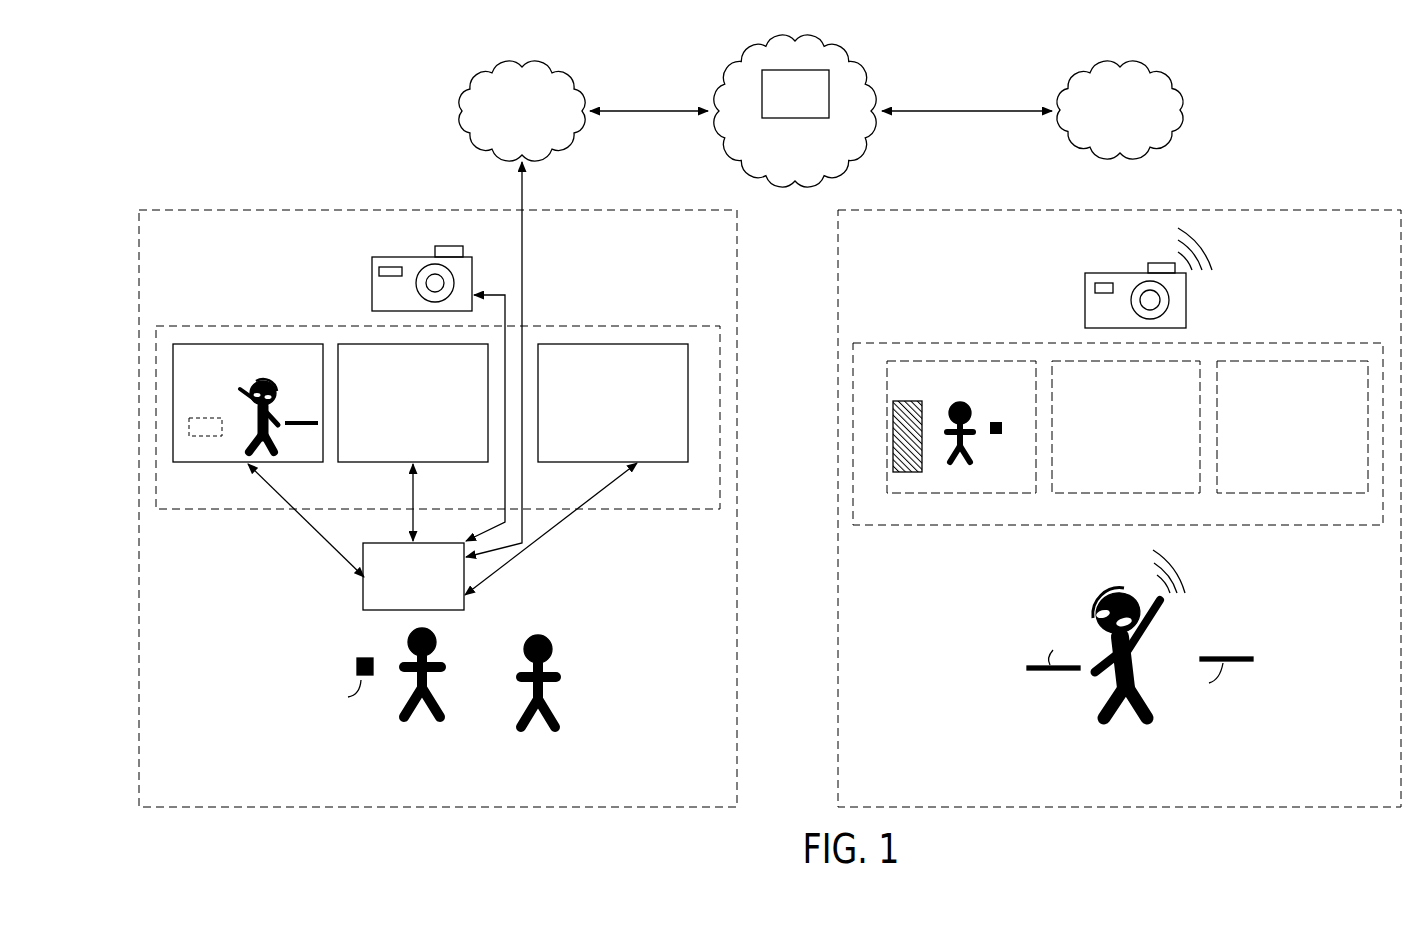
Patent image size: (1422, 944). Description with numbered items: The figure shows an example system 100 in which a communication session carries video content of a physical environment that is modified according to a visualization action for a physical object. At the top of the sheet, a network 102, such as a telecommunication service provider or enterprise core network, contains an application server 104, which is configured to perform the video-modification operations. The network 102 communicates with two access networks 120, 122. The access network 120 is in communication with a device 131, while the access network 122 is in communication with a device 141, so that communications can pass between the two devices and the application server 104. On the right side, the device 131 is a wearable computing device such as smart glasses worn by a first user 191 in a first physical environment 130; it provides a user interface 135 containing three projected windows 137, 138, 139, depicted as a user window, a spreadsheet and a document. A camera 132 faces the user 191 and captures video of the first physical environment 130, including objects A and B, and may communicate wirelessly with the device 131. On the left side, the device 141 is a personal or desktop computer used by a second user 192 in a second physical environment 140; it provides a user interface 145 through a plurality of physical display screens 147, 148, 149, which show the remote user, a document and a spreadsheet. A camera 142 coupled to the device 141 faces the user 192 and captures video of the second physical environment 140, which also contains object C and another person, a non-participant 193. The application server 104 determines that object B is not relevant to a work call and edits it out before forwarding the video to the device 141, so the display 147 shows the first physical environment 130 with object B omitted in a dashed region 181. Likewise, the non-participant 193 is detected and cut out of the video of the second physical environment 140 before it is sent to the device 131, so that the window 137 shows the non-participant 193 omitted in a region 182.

The system 100 is at (122, 43).
The network 102 is at (778, 164).
The application server 104 is at (779, 109).
The access network 120 is at (1103, 136).
The access network 122 is at (505, 137).
The first physical environment 130 is at (1133, 801).
The device 131 is at (1168, 598).
The camera 132 is at (1085, 300).
The user interface 135 is at (1015, 525).
The window 137 is at (975, 493).
The window 138 is at (1099, 493).
The window 139 is at (1306, 493).
The second physical environment 140 is at (464, 801).
The device 141 is at (398, 594).
The camera 142 is at (372, 290).
The user interface 145 is at (648, 510).
The display screen 147 is at (212, 462).
The display screen 148 is at (386, 462).
The display screen 149 is at (670, 462).
The region 181 is at (206, 418).
The region 182 is at (907, 401).
The first user 191 is at (1147, 724).
The second user 192 is at (438, 726).
The non-participant 193 is at (553, 730).